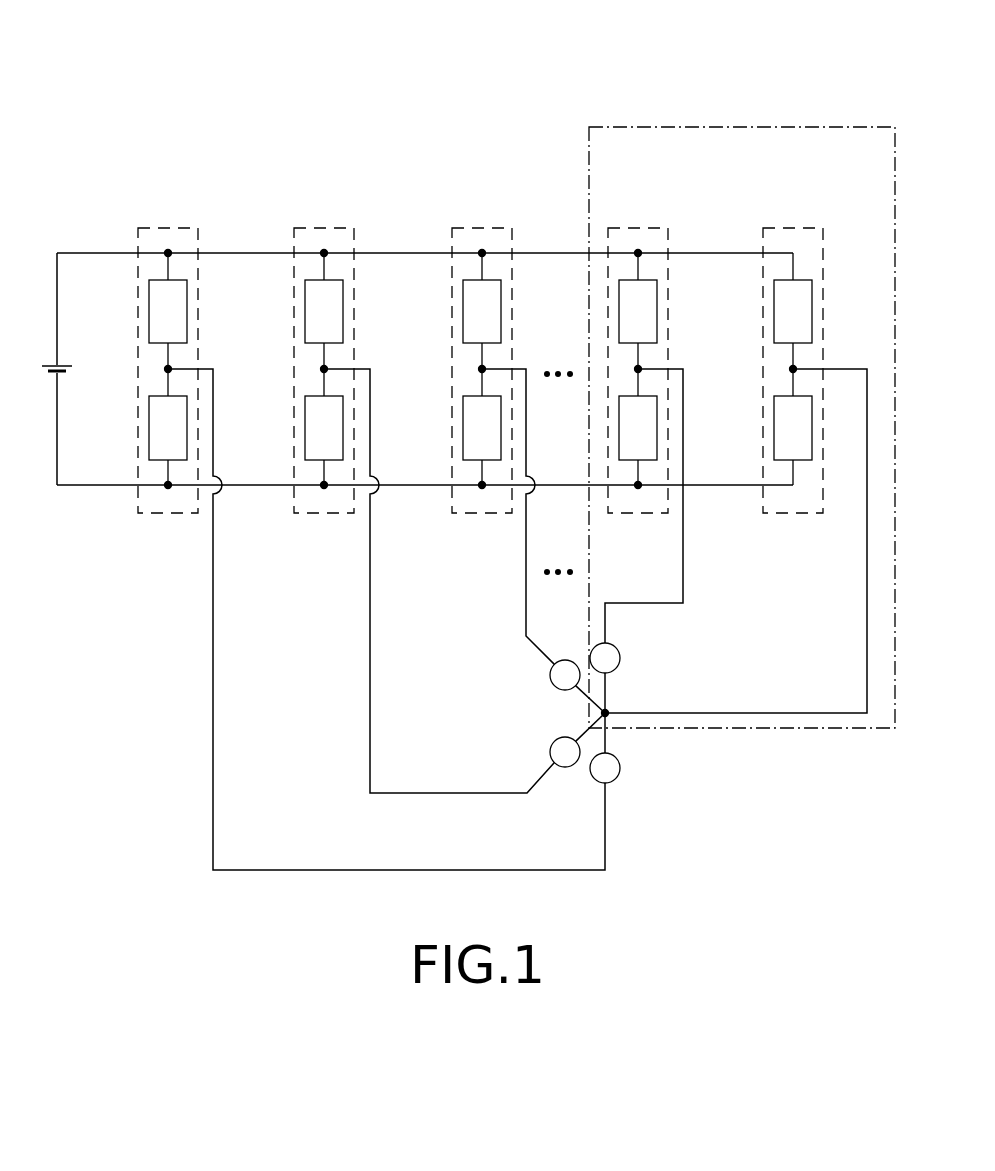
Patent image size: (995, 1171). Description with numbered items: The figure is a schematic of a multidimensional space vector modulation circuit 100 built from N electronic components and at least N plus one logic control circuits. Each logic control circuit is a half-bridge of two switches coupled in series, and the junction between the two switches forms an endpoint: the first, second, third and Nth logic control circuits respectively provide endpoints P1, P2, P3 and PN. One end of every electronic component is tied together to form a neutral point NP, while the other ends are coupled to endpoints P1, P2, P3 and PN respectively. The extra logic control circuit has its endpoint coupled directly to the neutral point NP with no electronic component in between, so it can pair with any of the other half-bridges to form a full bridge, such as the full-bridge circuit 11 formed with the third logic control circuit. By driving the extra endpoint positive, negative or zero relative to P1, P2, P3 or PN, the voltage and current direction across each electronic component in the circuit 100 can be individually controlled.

The multidimensional space vector modulation circuit 100 is at (455, 83).
The endpoint P1 is at (170, 367).
The endpoint P2 is at (326, 367).
The endpoint P3 is at (484, 367).
The endpoint PN is at (640, 367).
The full-bridge circuit 11 is at (896, 342).
The neutral point NP is at (607, 711).